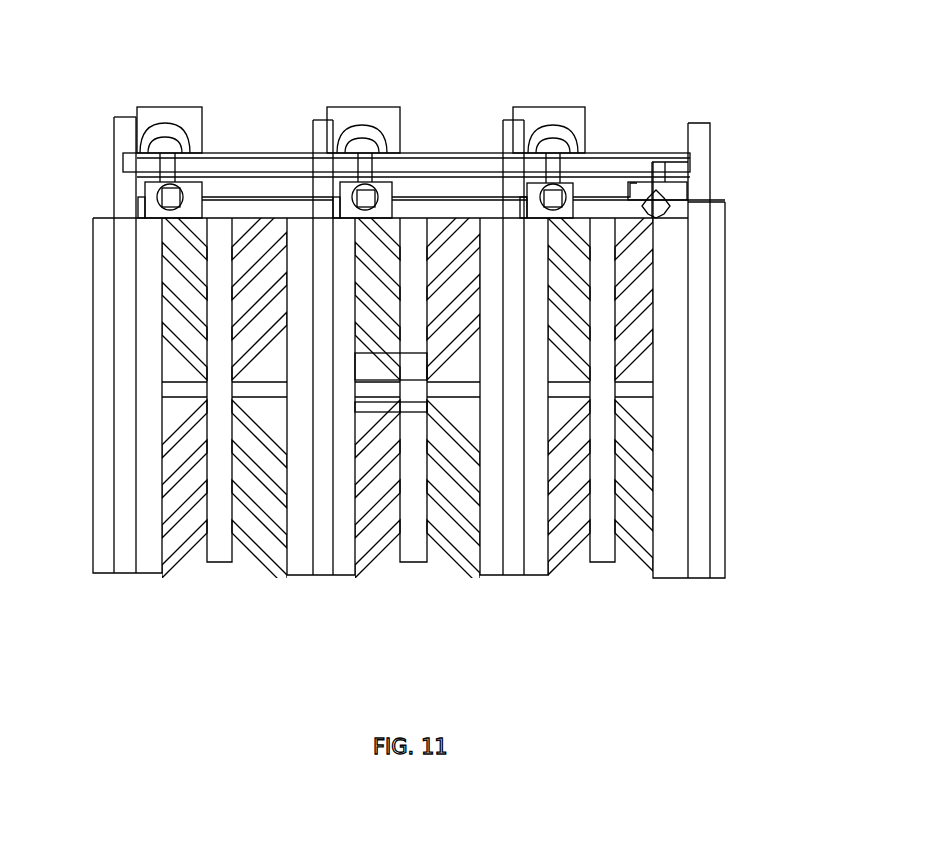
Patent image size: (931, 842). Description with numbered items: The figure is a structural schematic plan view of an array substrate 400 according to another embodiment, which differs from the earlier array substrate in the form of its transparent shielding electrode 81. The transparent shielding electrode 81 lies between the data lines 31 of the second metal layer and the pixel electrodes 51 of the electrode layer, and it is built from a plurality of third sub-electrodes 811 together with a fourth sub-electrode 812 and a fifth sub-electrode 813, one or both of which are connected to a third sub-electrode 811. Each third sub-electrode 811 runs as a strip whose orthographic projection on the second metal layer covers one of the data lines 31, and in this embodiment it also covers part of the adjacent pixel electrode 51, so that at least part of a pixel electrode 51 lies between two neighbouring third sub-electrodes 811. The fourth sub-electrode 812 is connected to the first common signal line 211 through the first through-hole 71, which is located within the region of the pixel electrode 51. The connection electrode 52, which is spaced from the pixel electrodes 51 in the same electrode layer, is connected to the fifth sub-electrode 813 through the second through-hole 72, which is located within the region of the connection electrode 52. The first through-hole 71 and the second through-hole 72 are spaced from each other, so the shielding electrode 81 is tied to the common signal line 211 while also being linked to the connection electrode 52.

The array substrate 400 is at (457, 36).
The first common signal line 211 is at (428, 197).
The connection electrode 52 is at (493, 218).
The second through-hole 72 is at (655, 188).
The data line 31 is at (700, 176).
The first through-hole 71 is at (402, 390).
The third sub-electrode 811 is at (315, 520).
The fourth sub-electrode 812 is at (402, 412).
The fifth sub-electrode 813 is at (660, 212).
The transparent shielding electrode 81 is at (533, 638).
The pixel electrode 51 is at (612, 562).